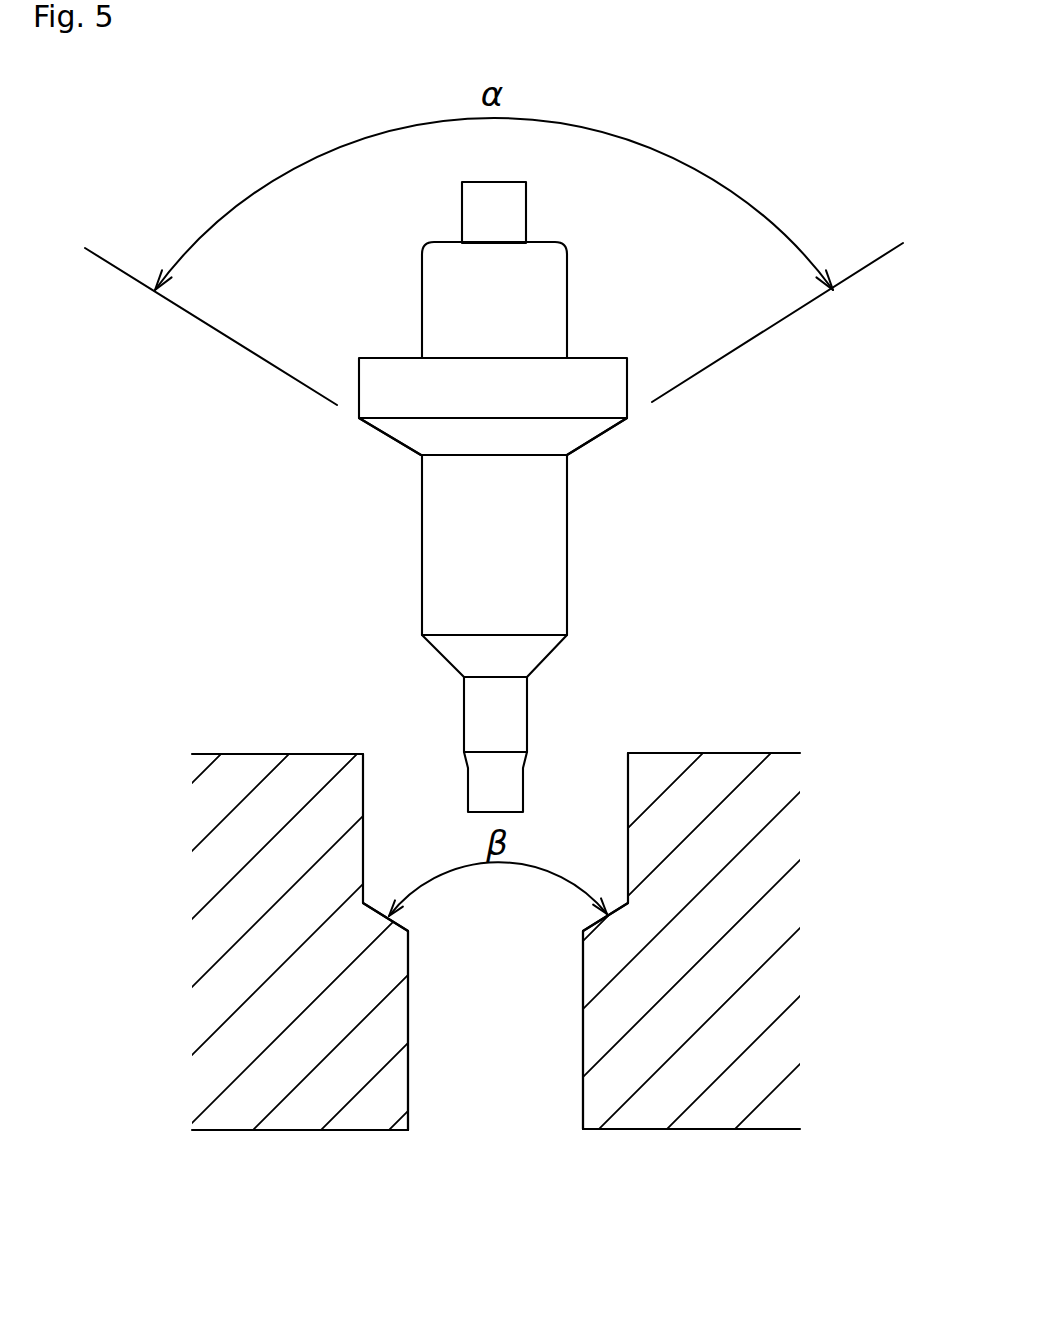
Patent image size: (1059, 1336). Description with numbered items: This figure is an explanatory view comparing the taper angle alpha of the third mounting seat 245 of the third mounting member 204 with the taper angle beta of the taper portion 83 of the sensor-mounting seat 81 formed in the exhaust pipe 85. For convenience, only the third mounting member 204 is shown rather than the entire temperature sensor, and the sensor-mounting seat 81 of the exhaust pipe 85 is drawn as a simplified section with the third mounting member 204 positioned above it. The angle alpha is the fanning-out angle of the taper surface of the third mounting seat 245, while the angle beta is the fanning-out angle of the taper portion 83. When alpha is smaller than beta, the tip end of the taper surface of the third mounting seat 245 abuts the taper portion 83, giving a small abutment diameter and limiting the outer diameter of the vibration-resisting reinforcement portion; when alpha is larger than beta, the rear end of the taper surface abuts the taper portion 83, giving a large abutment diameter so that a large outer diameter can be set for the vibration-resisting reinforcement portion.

The third mounting member 204 is at (603, 482).
The third mounting seat 245 is at (415, 433).
The sensor-mounting seat 81 is at (413, 758).
The taper portion 83 is at (592, 917).
The exhaust pipe 85 is at (710, 1113).